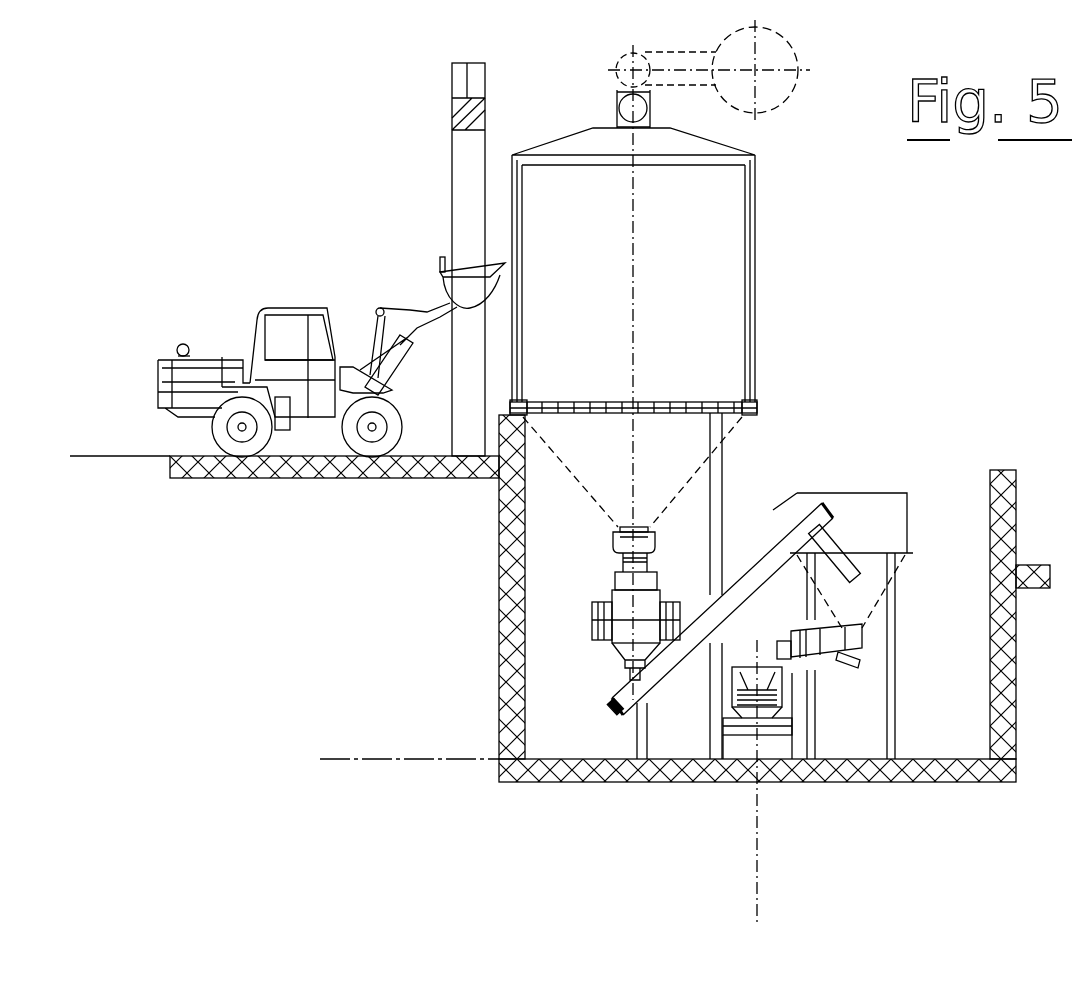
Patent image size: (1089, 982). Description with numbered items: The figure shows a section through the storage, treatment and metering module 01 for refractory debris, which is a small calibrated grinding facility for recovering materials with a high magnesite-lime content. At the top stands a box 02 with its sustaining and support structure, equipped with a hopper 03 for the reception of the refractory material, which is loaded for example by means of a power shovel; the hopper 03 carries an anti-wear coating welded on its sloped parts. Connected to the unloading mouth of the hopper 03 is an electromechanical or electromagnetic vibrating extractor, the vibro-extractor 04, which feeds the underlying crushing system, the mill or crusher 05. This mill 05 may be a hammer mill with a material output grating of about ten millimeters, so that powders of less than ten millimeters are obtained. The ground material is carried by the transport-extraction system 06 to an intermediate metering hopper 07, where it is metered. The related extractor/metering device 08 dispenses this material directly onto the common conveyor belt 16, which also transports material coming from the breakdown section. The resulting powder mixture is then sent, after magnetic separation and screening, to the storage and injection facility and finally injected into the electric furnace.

The module 01 is at (908, 353).
The box 02 is at (715, 318).
The hopper 03 is at (685, 470).
The vibro-extractor 04 is at (657, 558).
The mill or crusher 05 is at (625, 632).
The transport-extraction system 06 is at (763, 572).
The metering hopper 07 is at (880, 602).
The extractor/metering device 08 is at (830, 657).
The common conveyor belt 16 is at (748, 670).